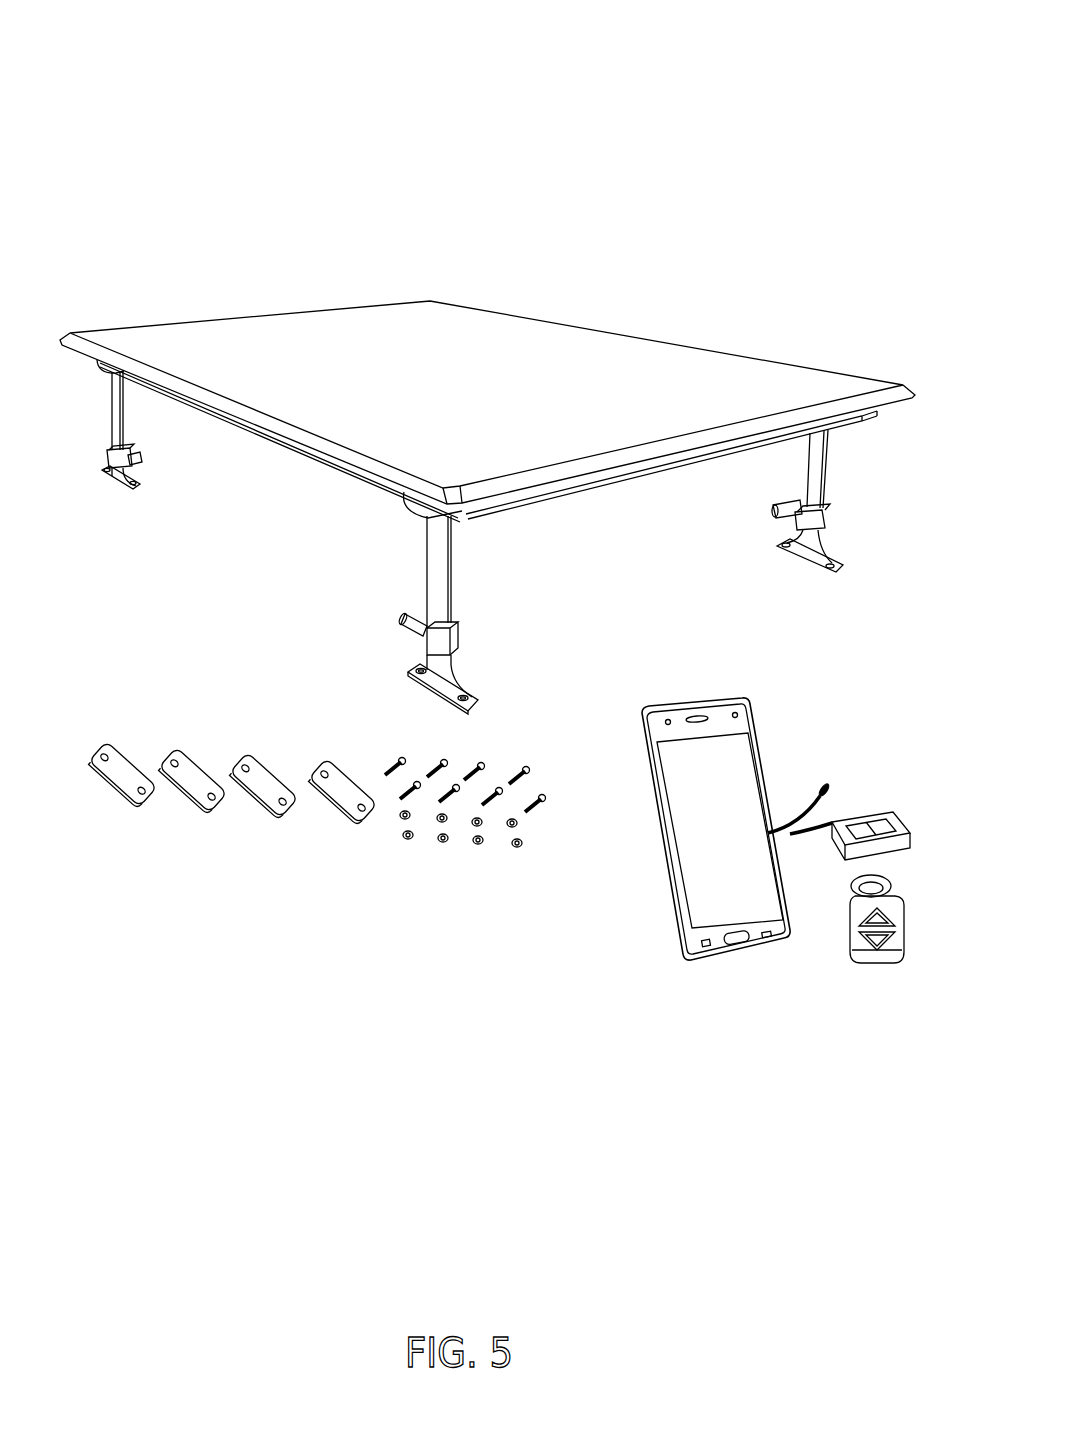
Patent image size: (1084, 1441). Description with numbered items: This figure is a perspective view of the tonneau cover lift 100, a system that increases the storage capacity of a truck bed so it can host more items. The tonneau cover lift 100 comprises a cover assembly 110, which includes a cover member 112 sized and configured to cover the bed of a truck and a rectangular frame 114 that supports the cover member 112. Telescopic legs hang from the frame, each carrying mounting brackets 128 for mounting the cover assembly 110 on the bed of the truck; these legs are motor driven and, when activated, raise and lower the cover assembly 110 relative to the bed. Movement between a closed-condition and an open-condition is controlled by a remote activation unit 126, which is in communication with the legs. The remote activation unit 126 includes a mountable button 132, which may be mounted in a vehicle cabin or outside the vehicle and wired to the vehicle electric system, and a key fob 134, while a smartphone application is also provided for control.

The tonneau cover lift 100 is at (688, 76).
The cover assembly 110 is at (731, 106).
The cover member 112 is at (427, 312).
The rectangular frame 114 is at (432, 517).
The remote activation unit 126 is at (756, 658).
The mounting brackets 128 is at (432, 676).
The mountable button 132 is at (898, 822).
The key fob 134 is at (892, 909).